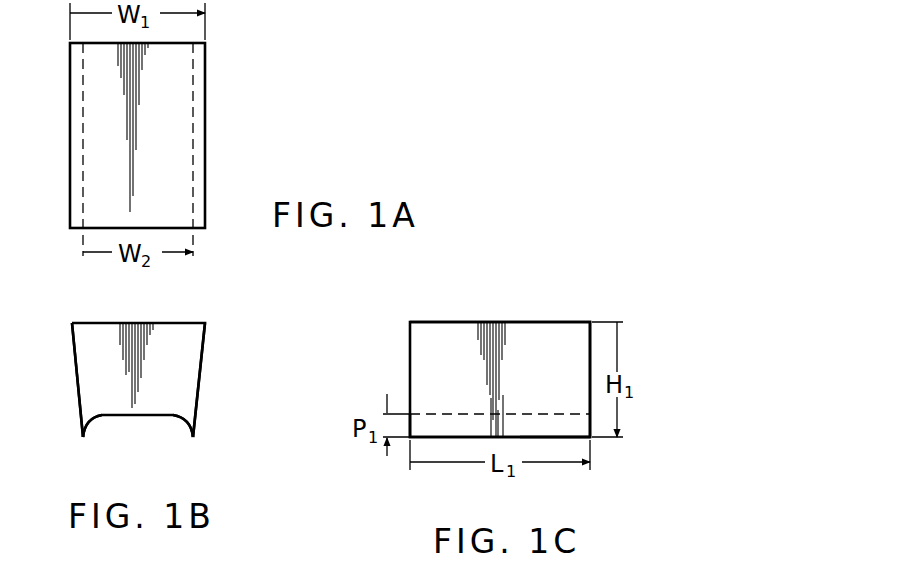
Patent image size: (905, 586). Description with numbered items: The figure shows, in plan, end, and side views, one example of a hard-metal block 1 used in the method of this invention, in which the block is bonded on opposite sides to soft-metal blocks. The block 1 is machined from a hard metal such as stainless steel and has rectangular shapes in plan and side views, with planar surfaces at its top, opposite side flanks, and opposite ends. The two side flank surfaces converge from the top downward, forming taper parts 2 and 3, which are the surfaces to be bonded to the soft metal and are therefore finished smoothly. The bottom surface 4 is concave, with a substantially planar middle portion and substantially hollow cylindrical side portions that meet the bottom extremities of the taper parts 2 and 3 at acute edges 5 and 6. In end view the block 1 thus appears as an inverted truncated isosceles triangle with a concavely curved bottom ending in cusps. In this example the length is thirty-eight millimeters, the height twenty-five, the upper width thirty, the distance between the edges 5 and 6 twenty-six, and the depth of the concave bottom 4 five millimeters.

In FIG. 1A, the hard-metal block 1 is at (168, 120).
In FIG. 1B, the hard-metal block 1 is at (185, 351).
In FIG. 1C, the hard-metal block 1 is at (497, 342).
In FIG. 1B, the taper part 2 is at (200, 378).
In FIG. 1C, the taper part 2 is at (423, 343).
In FIG. 1B, the taper part 3 is at (77, 377).
In FIG. 1B, the bottom surface 4 is at (137, 416).
In FIG. 1C, the bottom surface 4 is at (445, 425).
In FIG. 1B, the acute edge 5 is at (193, 438).
In FIG. 1C, the acute edge 5 is at (556, 438).
In FIG. 1B, the acute edge 6 is at (83, 438).